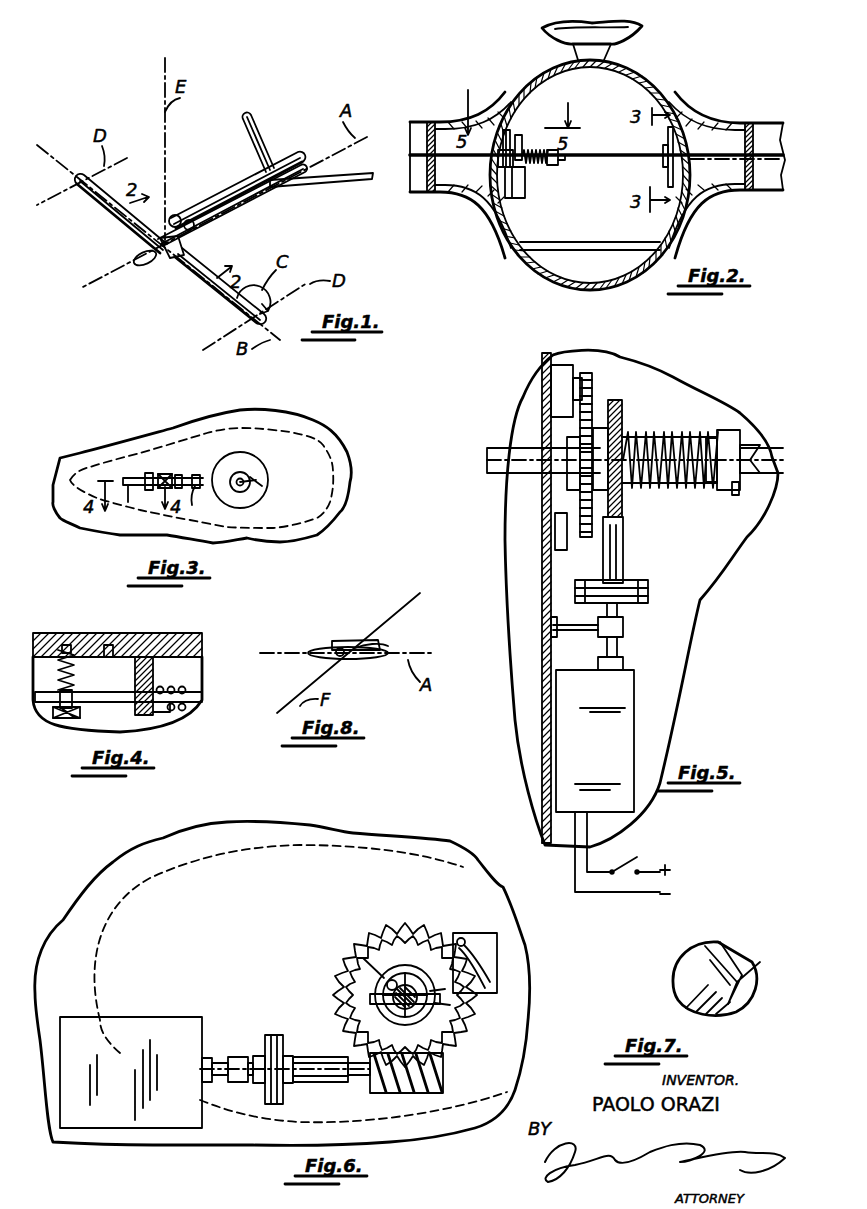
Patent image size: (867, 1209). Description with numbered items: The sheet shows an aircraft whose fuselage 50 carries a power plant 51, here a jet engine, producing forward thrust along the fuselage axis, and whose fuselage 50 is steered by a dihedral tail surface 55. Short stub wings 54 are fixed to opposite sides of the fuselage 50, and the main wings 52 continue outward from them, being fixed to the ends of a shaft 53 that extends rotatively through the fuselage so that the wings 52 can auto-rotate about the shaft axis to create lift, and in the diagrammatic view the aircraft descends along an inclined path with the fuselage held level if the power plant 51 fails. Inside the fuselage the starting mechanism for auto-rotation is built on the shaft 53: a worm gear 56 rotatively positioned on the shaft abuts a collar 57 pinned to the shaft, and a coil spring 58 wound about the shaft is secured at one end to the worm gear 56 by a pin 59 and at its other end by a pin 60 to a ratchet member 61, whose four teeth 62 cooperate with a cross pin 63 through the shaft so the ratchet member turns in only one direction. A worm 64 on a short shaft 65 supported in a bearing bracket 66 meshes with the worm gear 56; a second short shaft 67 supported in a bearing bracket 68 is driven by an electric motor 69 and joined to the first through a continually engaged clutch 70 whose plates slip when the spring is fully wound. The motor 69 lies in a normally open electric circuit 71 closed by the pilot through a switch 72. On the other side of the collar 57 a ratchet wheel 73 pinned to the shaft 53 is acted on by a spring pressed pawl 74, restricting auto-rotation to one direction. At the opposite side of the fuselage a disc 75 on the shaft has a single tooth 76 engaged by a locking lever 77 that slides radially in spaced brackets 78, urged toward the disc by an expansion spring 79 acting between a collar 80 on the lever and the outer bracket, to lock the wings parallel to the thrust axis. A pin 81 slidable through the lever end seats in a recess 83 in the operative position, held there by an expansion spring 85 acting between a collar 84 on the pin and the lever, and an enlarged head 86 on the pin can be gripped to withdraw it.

In FIG. 1, the fuselage 50 is at (248, 203).
In FIG. 2, the fuselage 50 is at (628, 72).
In FIG. 3, the fuselage 50 is at (331, 434).
In FIG. 4, the fuselage 50 is at (200, 641).
In FIG. 8, the fuselage 50 is at (350, 661).
In FIG. 5, the fuselage 50 is at (551, 366).
In FIG. 6, the fuselage 50 is at (358, 838).
In FIG. 1, the power plant 51 is at (205, 198).
In FIG. 2, the power plant 51 is at (548, 32).
In FIG. 8, the power plant 51 is at (340, 640).
In FIG. 1, the wings 52 is at (92, 197).
In FIG. 2, the wings 52 is at (772, 124).
In FIG. 3, the wings 52 is at (328, 452).
In FIG. 8, the wings 52 is at (332, 650).
In FIG. 6, the wings 52 is at (290, 846).
In FIG. 1, the shaft 53 is at (184, 270).
In FIG. 2, the shaft 53 is at (588, 152).
In FIG. 3, the shaft 53 is at (246, 489).
In FIG. 5, the shaft 53 is at (488, 457).
In FIG. 6, the shaft 53 is at (436, 1028).
In FIG. 1, the stub wings 54 is at (140, 255).
In FIG. 2, the stub wings 54 is at (470, 205).
In FIG. 5, the stub wings 54 is at (505, 409).
In FIG. 1, the tail surface 55 is at (262, 142).
In FIG. 8, the tail surface 55 is at (385, 643).
In FIG. 2, the worm gear 56 is at (519, 133).
In FIG. 5, the worm gear 56 is at (618, 409).
In FIG. 6, the worm gear 56 is at (364, 961).
In FIG. 2, the collar 57 is at (507, 168).
In FIG. 5, the collar 57 is at (568, 470).
In FIG. 2, the coil spring 58 is at (531, 149).
In FIG. 5, the coil spring 58 is at (700, 436).
In FIG. 6, the coil spring 58 is at (388, 978).
In FIG. 5, the pin 59 is at (652, 448).
In FIG. 5, the pin 60 is at (712, 486).
In FIG. 6, the pin 60 is at (387, 985).
In FIG. 2, the ratchet member 61 is at (552, 166).
In FIG. 5, the ratchet member 61 is at (735, 432).
In FIG. 7, the ratchet member 61 is at (675, 996).
In FIG. 5, the teeth 62 is at (754, 447).
In FIG. 6, the teeth 62 is at (393, 1003).
In FIG. 7, the teeth 62 is at (738, 959).
In FIG. 2, the cross pin 63 is at (562, 160).
In FIG. 5, the cross pin 63 is at (735, 496).
In FIG. 6, the cross pin 63 is at (437, 1002).
In FIG. 5, the worm 64 is at (620, 432).
In FIG. 6, the worm 64 is at (443, 1073).
In FIG. 5, the short shaft 65 is at (618, 557).
In FIG. 6, the short shaft 65 is at (357, 1077).
In FIG. 5, the bearing bracket 66 is at (624, 543).
In FIG. 6, the bearing bracket 66 is at (315, 1059).
In FIG. 5, the second short shaft 67 is at (620, 648).
In FIG. 6, the second short shaft 67 is at (210, 1062).
In FIG. 5, the bearing bracket 68 is at (625, 628).
In FIG. 6, the bearing bracket 68 is at (238, 1085).
In FIG. 2, the electric motor 69 is at (520, 195).
In FIG. 5, the electric motor 69 is at (634, 704).
In FIG. 6, the electric motor 69 is at (195, 1017).
In FIG. 2, the clutch 70 is at (527, 187).
In FIG. 5, the clutch 70 is at (648, 591).
In FIG. 6, the clutch 70 is at (269, 1035).
In FIG. 5, the electric circuit 71 is at (575, 873).
In FIG. 5, the switch 72 is at (637, 859).
In FIG. 2, the ratchet wheel 73 is at (506, 128).
In FIG. 5, the ratchet wheel 73 is at (580, 500).
In FIG. 6, the ratchet wheel 73 is at (403, 931).
In FIG. 5, the spring pressed pawl 74 is at (590, 385).
In FIG. 6, the spring pressed pawl 74 is at (466, 937).
In FIG. 2, the disc 75 is at (667, 148).
In FIG. 3, the disc 75 is at (252, 486).
In FIG. 3, the tooth 76 is at (215, 478).
In FIG. 3, the locking lever 77 is at (194, 500).
In FIG. 4, the locking lever 77 is at (198, 698).
In FIG. 2, the brackets 78 is at (678, 146).
In FIG. 3, the brackets 78 is at (148, 472).
In FIG. 4, the brackets 78 is at (152, 660).
In FIG. 3, the expansion spring 79 is at (160, 476).
In FIG. 4, the expansion spring 79 is at (172, 713).
In FIG. 3, the collar 80 is at (183, 502).
In FIG. 4, the pin 81 is at (75, 698).
In FIG. 4, the recess 83 is at (110, 648).
In FIG. 4, the collar 84 is at (60, 645).
In FIG. 4, the expansion spring 85 is at (78, 652).
In FIG. 3, the enlarged head 86 is at (128, 502).
In FIG. 4, the enlarged head 86 is at (63, 720).